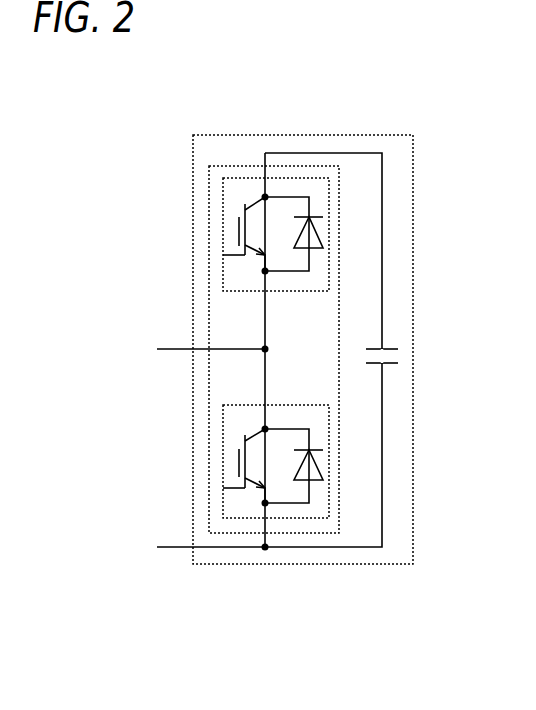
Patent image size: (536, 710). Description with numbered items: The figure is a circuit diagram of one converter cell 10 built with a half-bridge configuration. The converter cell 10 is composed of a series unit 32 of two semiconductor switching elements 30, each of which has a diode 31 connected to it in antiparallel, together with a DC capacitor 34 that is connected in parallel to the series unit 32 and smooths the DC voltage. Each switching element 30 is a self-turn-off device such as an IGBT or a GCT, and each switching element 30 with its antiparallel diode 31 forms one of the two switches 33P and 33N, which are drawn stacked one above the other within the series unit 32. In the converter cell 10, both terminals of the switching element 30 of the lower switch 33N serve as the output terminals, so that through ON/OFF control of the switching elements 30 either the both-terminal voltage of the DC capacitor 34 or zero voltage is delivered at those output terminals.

The converter cell 10 is at (413, 150).
The semiconductor switching element 30 is at (237, 202).
The diode 31 is at (313, 210).
The series unit 32 is at (217, 165).
The switch 33P is at (223, 277).
The switch 33N is at (222, 413).
The DC capacitor 34 is at (388, 340).